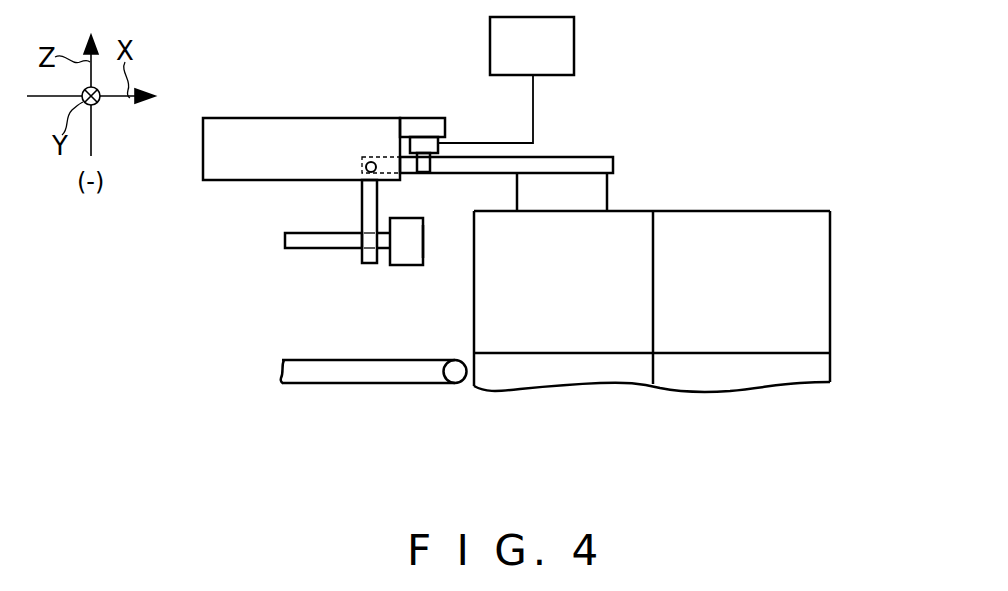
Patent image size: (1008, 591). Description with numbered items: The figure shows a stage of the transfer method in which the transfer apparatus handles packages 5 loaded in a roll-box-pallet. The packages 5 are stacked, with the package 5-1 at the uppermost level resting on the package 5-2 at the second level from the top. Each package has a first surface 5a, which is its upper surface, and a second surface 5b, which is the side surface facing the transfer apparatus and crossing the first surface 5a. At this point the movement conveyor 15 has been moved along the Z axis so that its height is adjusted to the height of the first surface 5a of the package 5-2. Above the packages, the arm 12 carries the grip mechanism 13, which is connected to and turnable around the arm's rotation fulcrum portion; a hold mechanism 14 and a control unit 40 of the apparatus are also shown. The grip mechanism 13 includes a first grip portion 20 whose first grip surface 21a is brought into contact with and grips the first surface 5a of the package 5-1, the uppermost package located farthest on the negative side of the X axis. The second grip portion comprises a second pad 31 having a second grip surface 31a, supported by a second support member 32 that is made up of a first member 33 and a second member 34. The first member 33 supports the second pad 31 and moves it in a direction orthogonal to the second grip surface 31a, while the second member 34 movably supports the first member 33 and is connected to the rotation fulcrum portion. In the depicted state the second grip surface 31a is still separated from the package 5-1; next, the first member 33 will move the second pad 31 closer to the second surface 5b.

The package 5 is at (810, 300).
The package at the uppermost level 5-1 is at (613, 280).
The package at the second level 5-2 is at (603, 368).
The first surface 5a is at (633, 209).
The second surface 5b is at (462, 249).
The arm 12 is at (210, 153).
The grip mechanism 13 is at (565, 140).
The hold mechanism 14 is at (452, 139).
The movement conveyor 15 is at (288, 373).
The first grip portion 20 is at (624, 152).
The first grip surface 21a is at (560, 210).
The second pad 31 is at (407, 259).
The second grip surface 31a is at (425, 239).
The second support member 32 is at (282, 221).
The first member 33 is at (292, 242).
The second member 34 is at (368, 207).
The control unit 40 is at (489, 43).